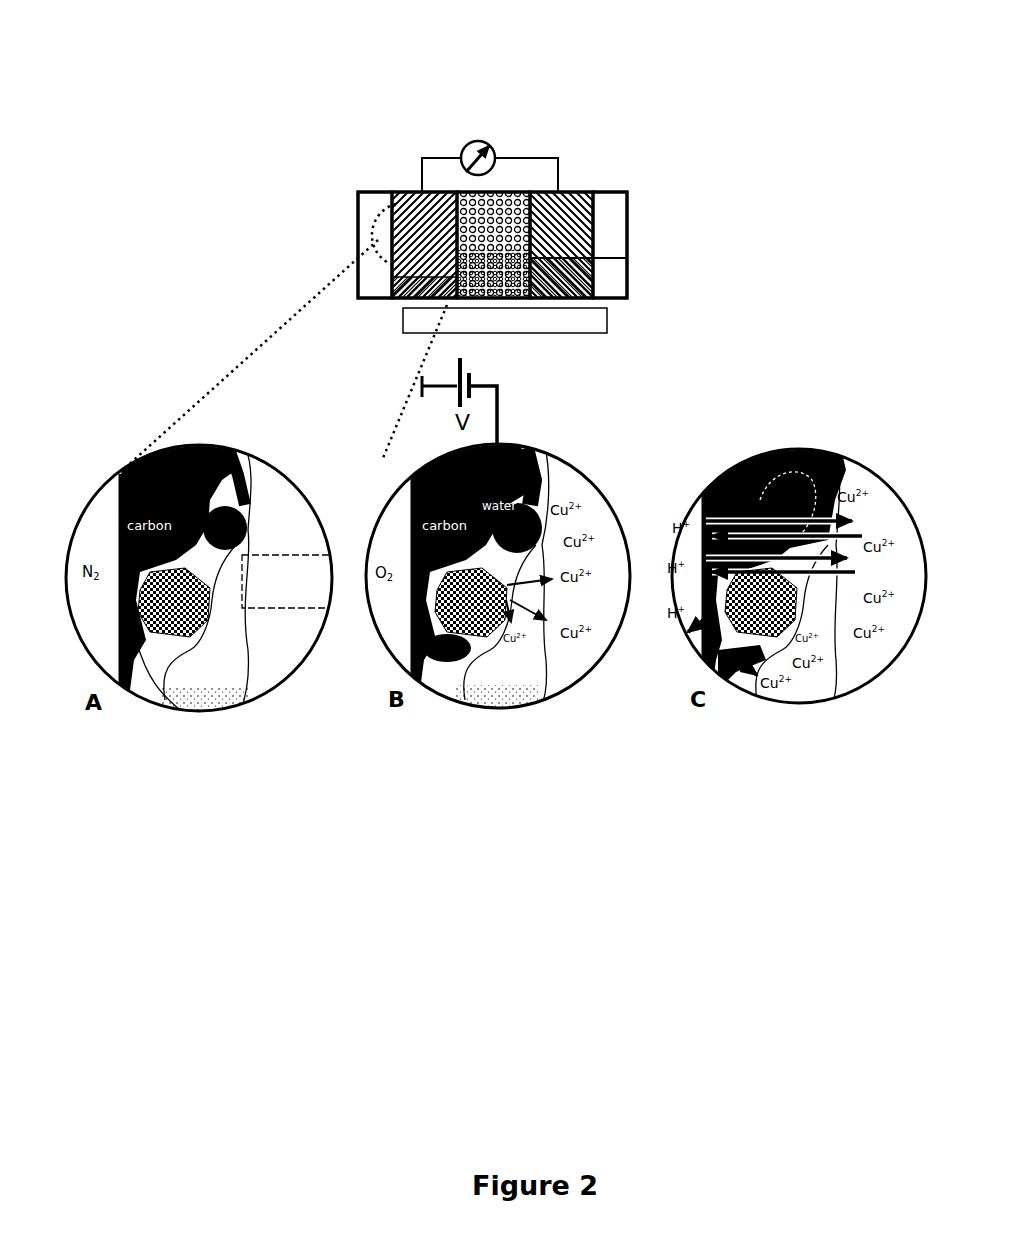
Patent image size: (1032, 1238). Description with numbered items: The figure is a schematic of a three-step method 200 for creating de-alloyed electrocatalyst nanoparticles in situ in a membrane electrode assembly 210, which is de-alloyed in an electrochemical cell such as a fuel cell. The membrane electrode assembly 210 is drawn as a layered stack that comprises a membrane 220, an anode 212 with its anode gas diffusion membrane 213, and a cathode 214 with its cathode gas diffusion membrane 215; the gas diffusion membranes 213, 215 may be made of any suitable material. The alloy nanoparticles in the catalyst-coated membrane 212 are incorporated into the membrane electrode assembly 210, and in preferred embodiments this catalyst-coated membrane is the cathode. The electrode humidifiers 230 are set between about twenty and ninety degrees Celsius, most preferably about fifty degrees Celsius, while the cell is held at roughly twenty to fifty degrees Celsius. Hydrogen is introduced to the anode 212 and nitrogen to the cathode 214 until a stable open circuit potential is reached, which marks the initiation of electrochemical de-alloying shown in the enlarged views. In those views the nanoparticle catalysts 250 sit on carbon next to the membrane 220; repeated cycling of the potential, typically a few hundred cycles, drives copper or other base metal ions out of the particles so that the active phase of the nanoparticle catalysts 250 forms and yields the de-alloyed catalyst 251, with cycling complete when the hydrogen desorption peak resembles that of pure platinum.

The three-step method 200 is at (168, 63).
The membrane electrode assembly 210 is at (549, 147).
The anode 212 is at (557, 222).
The anode gas diffusion membrane 213 is at (586, 239).
The cathode 214 is at (418, 220).
The cathode gas diffusion membrane 215 is at (355, 289).
The membrane 220 is at (900, 782).
The electrode humidifiers 230 is at (367, 275).
The nanoparticle catalysts 250 is at (178, 630).
The de-alloyed catalyst 251 is at (770, 637).